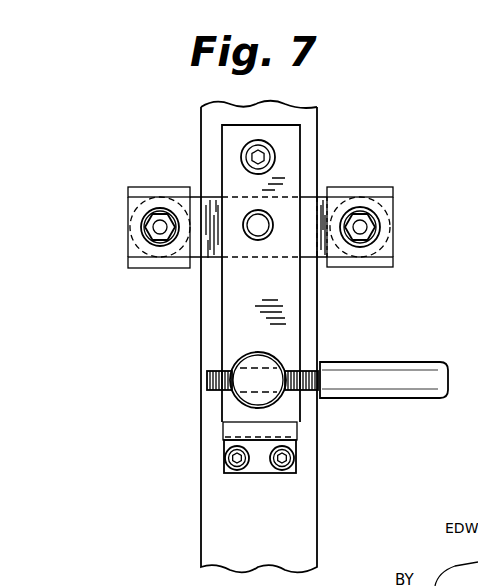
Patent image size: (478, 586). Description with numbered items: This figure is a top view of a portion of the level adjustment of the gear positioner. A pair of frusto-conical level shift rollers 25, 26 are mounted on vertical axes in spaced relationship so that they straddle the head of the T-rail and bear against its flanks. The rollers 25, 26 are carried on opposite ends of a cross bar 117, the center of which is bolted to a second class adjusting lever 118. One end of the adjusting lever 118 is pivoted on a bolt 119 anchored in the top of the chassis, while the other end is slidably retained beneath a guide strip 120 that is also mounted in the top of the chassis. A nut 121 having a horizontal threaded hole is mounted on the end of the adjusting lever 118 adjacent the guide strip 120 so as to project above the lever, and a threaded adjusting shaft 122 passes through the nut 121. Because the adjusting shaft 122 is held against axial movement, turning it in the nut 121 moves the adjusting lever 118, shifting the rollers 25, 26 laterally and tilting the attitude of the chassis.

The level shift roller 25 is at (122, 237).
The level shift roller 26 is at (395, 198).
The cross bar 117 is at (323, 213).
The adjusting lever 118 is at (237, 312).
The bolt 119 is at (272, 148).
The guide strip 120 is at (297, 444).
The nut 121 is at (248, 396).
The threaded adjusting shaft 122 is at (387, 362).